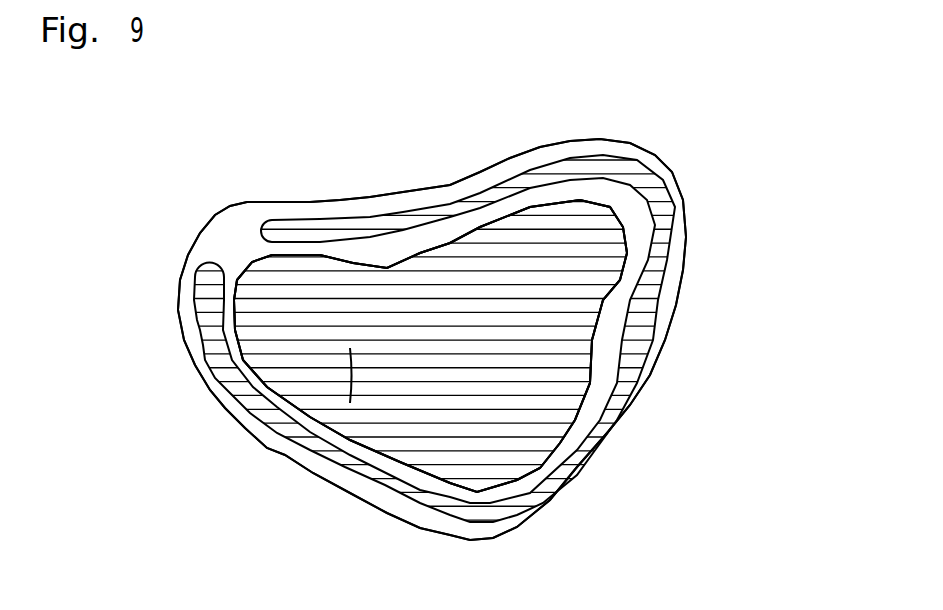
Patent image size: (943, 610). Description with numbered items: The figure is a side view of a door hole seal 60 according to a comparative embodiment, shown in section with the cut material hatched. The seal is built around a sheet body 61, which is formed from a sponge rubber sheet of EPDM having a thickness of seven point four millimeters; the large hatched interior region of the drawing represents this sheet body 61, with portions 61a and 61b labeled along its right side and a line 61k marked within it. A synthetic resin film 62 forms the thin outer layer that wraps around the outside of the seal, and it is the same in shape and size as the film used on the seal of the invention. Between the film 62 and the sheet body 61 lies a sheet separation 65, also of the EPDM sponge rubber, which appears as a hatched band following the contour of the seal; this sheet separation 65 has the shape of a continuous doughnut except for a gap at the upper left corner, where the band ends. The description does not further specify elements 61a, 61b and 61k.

The door hole seal 60 is at (676, 127).
The sheet body 61 is at (552, 342).
The inner portion of gasket body 61a is at (560, 305).
The outer portion of gasket body 61b is at (607, 303).
The parting line 61k is at (352, 373).
The synthetic resin film 62 is at (563, 148).
The sheet separation 65 is at (296, 233).